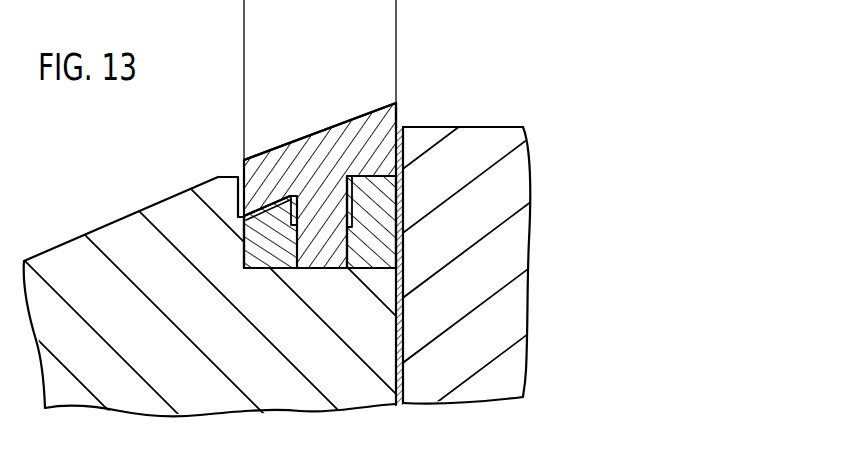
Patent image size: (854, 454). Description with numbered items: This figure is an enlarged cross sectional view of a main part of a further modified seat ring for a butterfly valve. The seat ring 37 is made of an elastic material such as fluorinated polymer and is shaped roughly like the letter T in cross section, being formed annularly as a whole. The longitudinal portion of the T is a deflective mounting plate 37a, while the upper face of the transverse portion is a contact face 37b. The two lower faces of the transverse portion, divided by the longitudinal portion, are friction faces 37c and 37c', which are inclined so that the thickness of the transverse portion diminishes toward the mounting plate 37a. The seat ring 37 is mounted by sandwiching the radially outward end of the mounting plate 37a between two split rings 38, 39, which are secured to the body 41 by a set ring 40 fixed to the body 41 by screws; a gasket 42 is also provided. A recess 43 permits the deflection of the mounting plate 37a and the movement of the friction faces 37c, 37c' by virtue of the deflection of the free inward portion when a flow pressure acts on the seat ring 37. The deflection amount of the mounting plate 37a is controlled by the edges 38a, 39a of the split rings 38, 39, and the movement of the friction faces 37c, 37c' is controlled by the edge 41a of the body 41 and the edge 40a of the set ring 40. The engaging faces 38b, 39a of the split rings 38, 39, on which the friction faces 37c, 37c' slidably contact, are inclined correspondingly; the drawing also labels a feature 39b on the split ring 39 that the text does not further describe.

The seat ring 37 is at (272, 146).
The deflective mounting plate 37a is at (318, 236).
The contact face 37b is at (375, 114).
The friction face 37c is at (415, 213).
The friction face 37c' is at (227, 178).
The split ring 38 is at (384, 233).
The edge of split ring 38a is at (353, 180).
The engaging face 38b is at (370, 182).
The split ring 39 is at (249, 270).
The edge / engaging face of split ring 39a is at (285, 199).
The lip of left insert 39b is at (257, 216).
The set ring 40 is at (490, 227).
The edge of set ring 40a is at (437, 128).
The body 41 is at (208, 392).
The edge of body 41a is at (227, 192).
The gasket 42 is at (404, 343).
The recess 43 is at (418, 128).